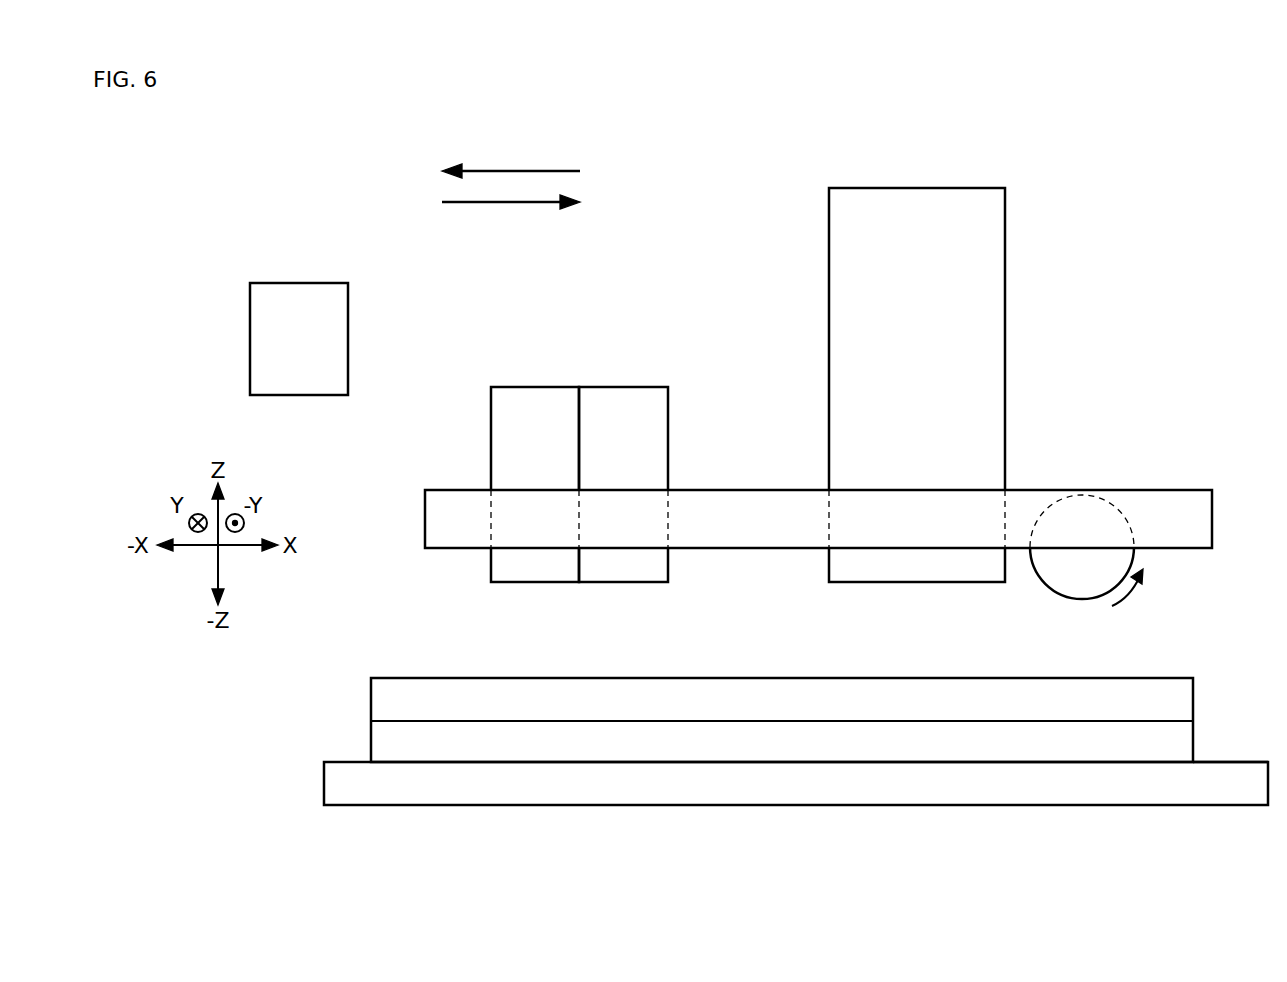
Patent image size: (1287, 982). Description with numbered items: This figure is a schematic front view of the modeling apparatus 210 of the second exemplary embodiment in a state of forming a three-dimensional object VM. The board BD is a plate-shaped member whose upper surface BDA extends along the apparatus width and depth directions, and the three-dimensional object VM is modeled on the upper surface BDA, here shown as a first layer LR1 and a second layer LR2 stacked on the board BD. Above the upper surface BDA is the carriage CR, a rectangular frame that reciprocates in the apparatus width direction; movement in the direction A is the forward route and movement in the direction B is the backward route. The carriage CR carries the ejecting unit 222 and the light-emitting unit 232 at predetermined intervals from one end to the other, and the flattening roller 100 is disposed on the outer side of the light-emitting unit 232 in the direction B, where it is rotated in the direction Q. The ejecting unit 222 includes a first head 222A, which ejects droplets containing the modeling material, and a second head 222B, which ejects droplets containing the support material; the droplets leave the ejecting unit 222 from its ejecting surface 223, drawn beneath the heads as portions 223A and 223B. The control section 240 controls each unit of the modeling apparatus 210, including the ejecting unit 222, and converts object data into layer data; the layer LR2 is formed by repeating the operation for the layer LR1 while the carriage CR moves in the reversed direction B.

The modeling apparatus 210 is at (1167, 229).
The control section 240 is at (303, 282).
The light-emitting unit 232 is at (914, 187).
The ejecting unit 222 is at (579, 417).
The first head 222A is at (533, 386).
The second head 222B is at (623, 438).
The ejecting surface 223 is at (579, 610).
The first nozzle section 223A is at (535, 583).
The second nozzle section 223B is at (623, 592).
The flattening roller 100 is at (1082, 600).
The carriage CR is at (1197, 519).
The rotation direction Q is at (1140, 600).
The forward direction A is at (512, 170).
The backward direction B is at (500, 205).
The three-dimensional object VM is at (669, 720).
The first layer LR1 is at (385, 737).
The second layer LR2 is at (385, 702).
The board BD is at (1092, 788).
The upper surface BDA is at (1215, 763).